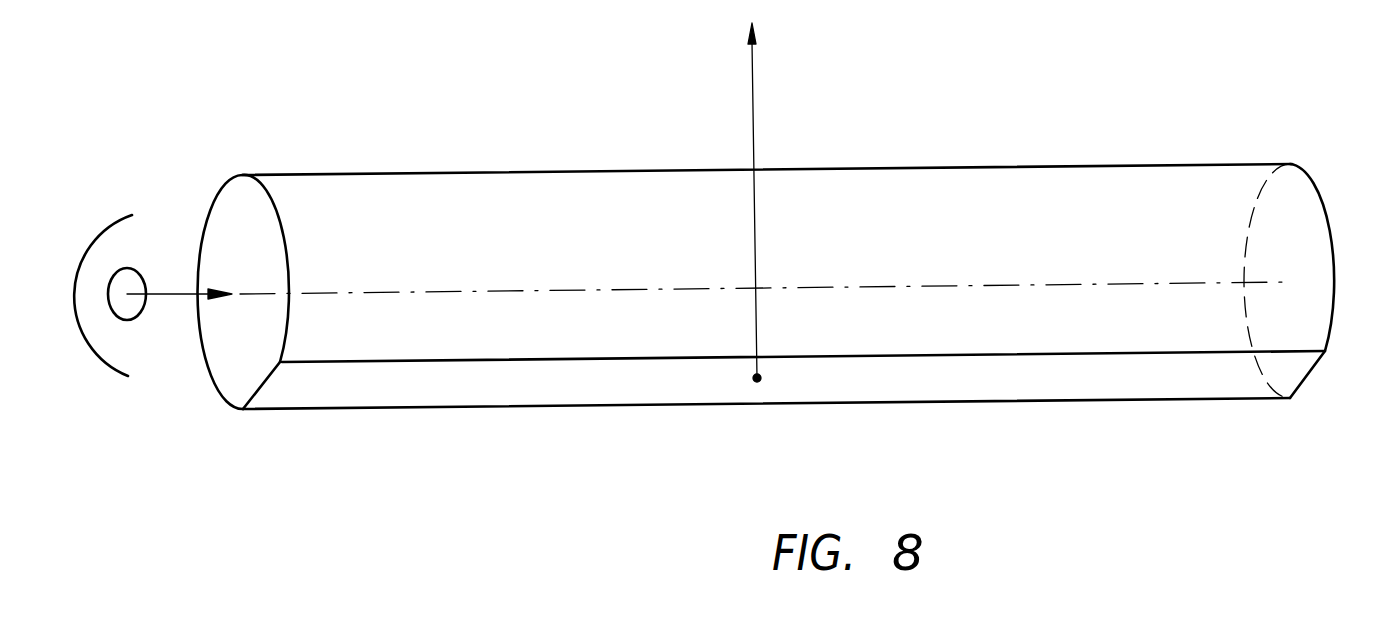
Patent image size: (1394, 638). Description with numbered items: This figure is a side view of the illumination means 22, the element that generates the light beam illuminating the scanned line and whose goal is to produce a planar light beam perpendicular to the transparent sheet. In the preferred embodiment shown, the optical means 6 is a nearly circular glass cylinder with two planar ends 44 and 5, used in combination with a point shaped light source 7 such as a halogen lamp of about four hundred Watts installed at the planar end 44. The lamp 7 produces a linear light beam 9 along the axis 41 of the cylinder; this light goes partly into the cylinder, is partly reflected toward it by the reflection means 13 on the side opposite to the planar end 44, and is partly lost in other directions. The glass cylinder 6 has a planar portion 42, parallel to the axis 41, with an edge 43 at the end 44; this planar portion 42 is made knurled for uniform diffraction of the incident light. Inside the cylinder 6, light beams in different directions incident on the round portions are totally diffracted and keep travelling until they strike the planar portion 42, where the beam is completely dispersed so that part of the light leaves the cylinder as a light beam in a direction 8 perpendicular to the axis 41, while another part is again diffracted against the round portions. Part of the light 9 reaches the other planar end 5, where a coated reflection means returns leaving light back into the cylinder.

The planar end 5 is at (1315, 252).
The optical means 6 is at (497, 207).
The point shaped light source 7 is at (130, 310).
The direction 8 is at (753, 98).
The linear light beam 9 is at (163, 293).
The reflection means 13 is at (98, 228).
The illumination means 22 is at (1234, 485).
The axis 41 is at (890, 285).
The planar portion 42 is at (563, 384).
The edge 43 is at (263, 383).
The planar end 44 is at (228, 378).